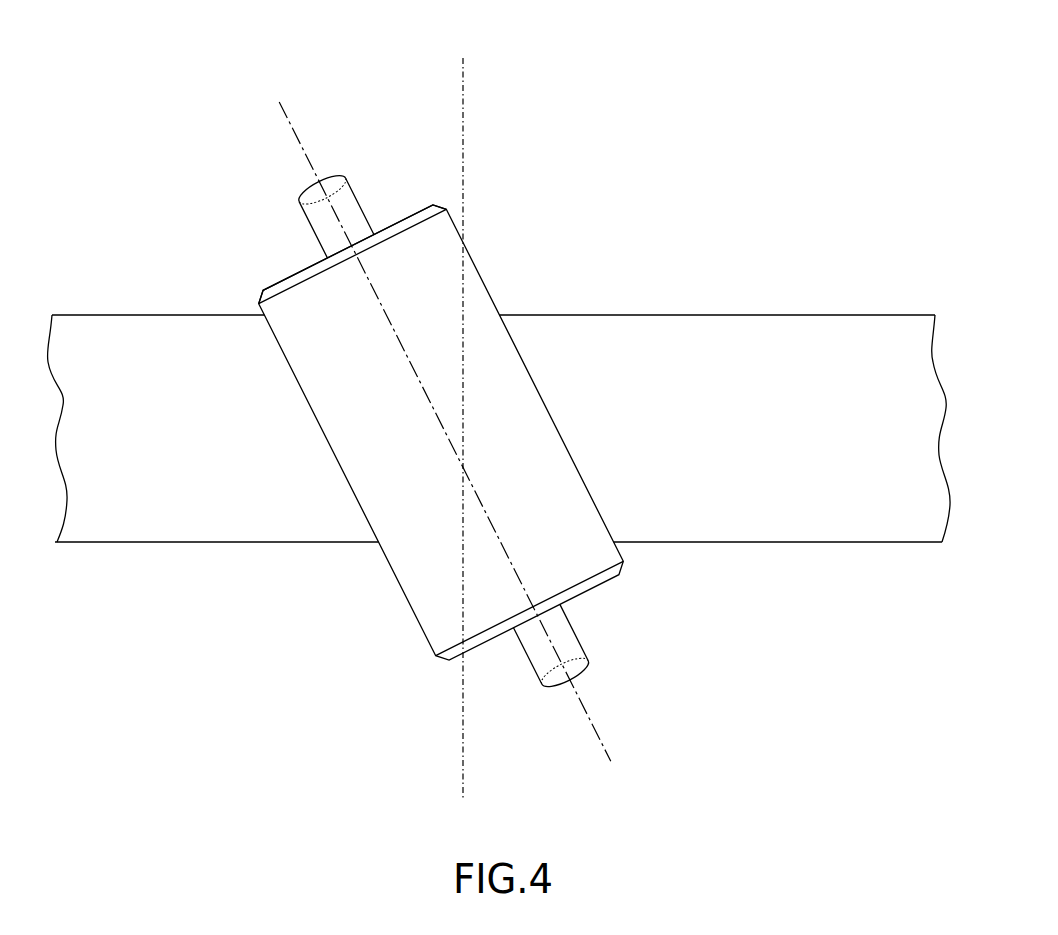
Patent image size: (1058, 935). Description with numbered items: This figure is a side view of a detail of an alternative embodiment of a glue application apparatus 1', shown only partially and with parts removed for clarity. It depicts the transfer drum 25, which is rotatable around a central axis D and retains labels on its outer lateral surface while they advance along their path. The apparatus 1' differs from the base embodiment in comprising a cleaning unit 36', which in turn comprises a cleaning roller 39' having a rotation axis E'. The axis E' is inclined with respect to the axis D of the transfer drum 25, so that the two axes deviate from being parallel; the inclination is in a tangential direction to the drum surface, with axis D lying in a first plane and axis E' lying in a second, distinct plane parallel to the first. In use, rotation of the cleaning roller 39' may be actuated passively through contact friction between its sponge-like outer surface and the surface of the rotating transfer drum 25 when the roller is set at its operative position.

The glue application apparatus 1' is at (498, 397).
The transfer drum 25 is at (792, 348).
The cleaning unit 36' is at (441, 461).
The cleaning roller 39' is at (353, 225).
The central axis D is at (465, 90).
The rotation axis E' is at (445, 412).